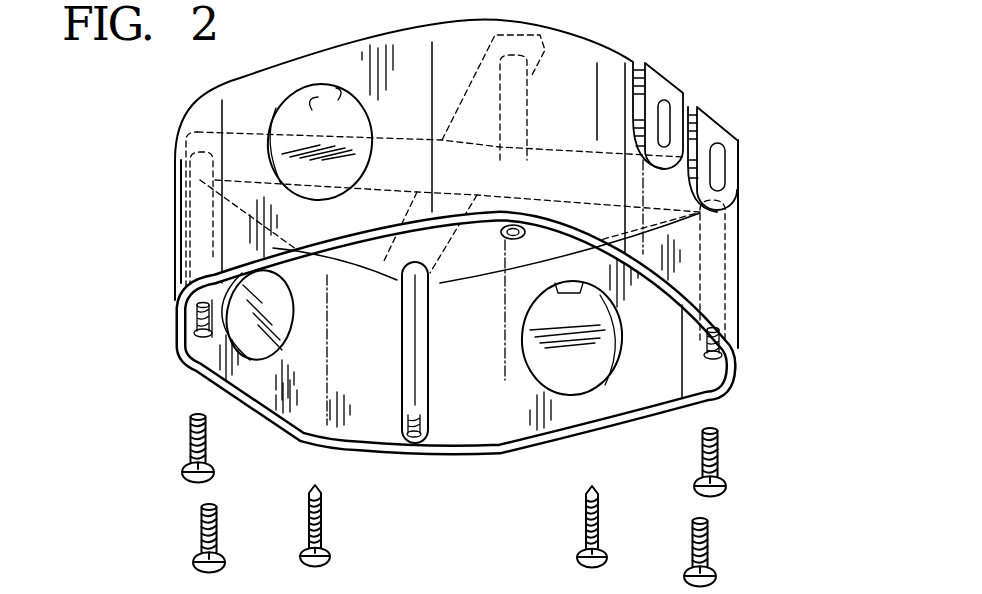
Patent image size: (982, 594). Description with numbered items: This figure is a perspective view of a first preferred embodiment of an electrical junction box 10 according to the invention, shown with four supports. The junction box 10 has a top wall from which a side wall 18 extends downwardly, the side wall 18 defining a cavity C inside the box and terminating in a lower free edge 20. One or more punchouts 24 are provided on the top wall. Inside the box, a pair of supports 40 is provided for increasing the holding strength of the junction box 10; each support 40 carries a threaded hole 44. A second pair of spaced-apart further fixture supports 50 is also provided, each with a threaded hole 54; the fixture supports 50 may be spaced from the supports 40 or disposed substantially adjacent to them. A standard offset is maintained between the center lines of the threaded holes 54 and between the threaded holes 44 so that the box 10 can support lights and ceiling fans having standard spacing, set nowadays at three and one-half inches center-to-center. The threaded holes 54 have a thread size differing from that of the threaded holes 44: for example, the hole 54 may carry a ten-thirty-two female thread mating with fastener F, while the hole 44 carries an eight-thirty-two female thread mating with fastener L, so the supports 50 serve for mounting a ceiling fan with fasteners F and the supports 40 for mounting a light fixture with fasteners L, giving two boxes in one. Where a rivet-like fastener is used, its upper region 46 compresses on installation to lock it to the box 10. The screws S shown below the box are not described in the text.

The junction box 10 is at (760, 111).
The side wall 18 is at (738, 258).
The lower free edge 20 is at (715, 387).
The punchout 24 is at (505, 141).
The support 40 is at (400, 377).
The threaded hole 44 is at (510, 240).
The upper region 46 is at (383, 280).
The further fixture support 50 is at (200, 322).
The threaded hole 54 is at (200, 337).
The cavity C is at (282, 441).
The self-tapping screw S is at (585, 535).
The fastener F is at (722, 465).
The fastener L is at (715, 547).